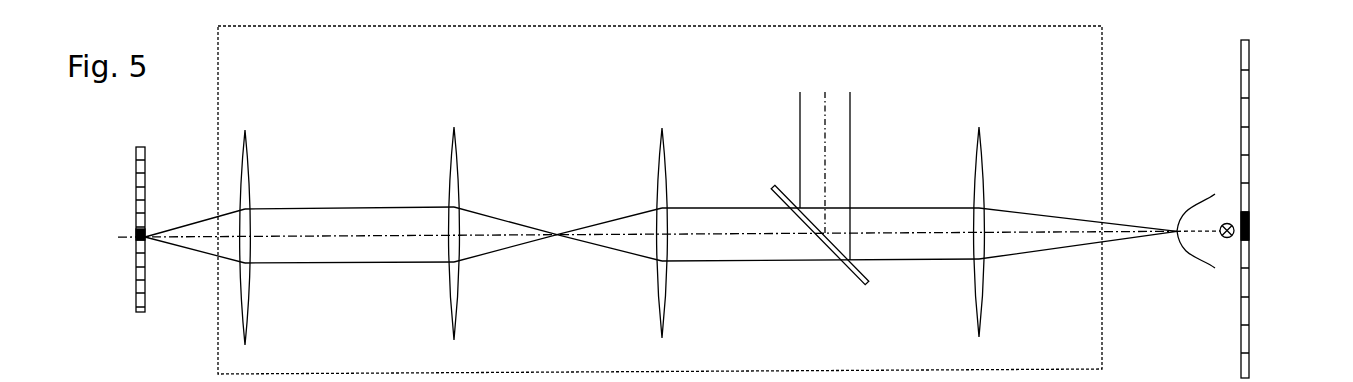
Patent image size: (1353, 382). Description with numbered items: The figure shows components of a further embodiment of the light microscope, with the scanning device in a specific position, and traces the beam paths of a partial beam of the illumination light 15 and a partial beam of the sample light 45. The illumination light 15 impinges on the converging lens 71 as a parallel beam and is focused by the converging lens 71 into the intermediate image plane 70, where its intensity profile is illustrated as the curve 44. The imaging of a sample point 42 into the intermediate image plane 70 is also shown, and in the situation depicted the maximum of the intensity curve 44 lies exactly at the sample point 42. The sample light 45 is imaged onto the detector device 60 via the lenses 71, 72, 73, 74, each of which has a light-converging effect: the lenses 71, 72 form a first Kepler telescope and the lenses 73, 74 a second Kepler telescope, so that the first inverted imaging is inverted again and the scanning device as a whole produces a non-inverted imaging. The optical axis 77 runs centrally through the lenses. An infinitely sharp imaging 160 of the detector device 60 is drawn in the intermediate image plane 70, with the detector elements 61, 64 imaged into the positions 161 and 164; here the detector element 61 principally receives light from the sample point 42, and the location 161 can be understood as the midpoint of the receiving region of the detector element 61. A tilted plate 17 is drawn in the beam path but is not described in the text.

The detector device 60 is at (122, 133).
The detector element 64 is at (140, 189).
The detector element 61 is at (134, 237).
The optical axis 77 is at (190, 236).
The lens 74 is at (244, 156).
The lens 73 is at (450, 139).
The sample light 45 is at (475, 247).
The lens 72 is at (656, 158).
The tilted plate / beam splitter 17 is at (773, 187).
The illumination light 15 is at (846, 103).
The converging lens 71 is at (975, 168).
The intensity curve 44 is at (1197, 213).
The sample point 42 is at (1224, 222).
The intermediate image plane 70 is at (1222, 88).
The imaging of the detector device 160 is at (1259, 310).
The imaging of detector element 164 is at (1250, 146).
The imaging of detector element 161 is at (1250, 229).